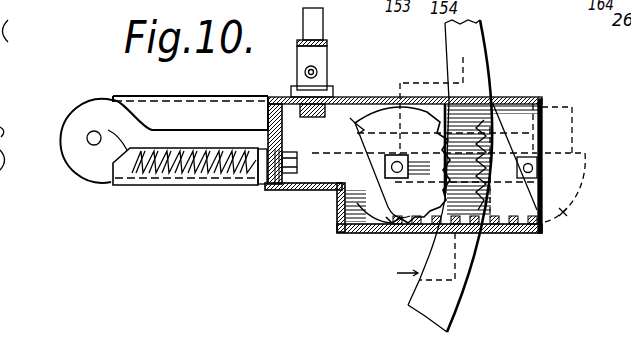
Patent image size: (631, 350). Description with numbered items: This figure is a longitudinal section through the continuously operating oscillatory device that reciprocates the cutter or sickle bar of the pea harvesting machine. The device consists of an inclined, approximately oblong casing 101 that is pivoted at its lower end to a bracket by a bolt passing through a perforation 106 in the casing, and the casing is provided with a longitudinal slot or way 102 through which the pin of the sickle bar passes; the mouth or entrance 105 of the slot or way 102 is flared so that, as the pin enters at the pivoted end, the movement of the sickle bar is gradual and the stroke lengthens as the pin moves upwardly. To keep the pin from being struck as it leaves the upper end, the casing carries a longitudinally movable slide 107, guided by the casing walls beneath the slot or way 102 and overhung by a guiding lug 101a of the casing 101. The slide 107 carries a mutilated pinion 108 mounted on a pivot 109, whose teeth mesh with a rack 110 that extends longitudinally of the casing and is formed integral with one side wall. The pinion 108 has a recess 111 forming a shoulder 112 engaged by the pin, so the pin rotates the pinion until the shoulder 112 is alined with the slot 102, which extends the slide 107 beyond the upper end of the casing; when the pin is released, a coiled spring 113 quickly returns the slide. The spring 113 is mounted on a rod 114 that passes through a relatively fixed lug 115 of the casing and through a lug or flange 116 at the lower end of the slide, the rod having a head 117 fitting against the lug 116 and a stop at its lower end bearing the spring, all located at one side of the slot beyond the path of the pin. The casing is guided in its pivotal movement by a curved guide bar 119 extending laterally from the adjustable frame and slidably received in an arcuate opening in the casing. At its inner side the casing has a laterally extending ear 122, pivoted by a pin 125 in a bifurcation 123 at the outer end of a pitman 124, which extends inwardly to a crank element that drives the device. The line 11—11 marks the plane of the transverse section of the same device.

The section line 11 is at (420, 165).
The inclined casing 101 is at (117, 221).
The guiding lug 101a is at (268, 98).
The longitudinal slot or way 102 is at (196, 127).
The mouth or entrance 105 is at (124, 123).
The perforation 106 is at (89, 144).
The slide 107 is at (338, 205).
The mutilated pinion 108 is at (113, 186).
The pivot 109 is at (392, 178).
The rack 110 is at (422, 234).
The recess 111 is at (380, 170).
The shoulder 112 is at (358, 128).
The coiled spring 113 is at (275, 186).
The rod 114 is at (272, 162).
The relatively fixed lug 115 is at (276, 190).
The lug or flange 116 is at (279, 190).
The head 117 is at (290, 156).
The curved guide bar 119 is at (483, 72).
The laterally extending ear 122 is at (298, 73).
The bifurcation 123 is at (326, 50).
The pitman 124 is at (323, 30).
The pin 125 is at (319, 73).